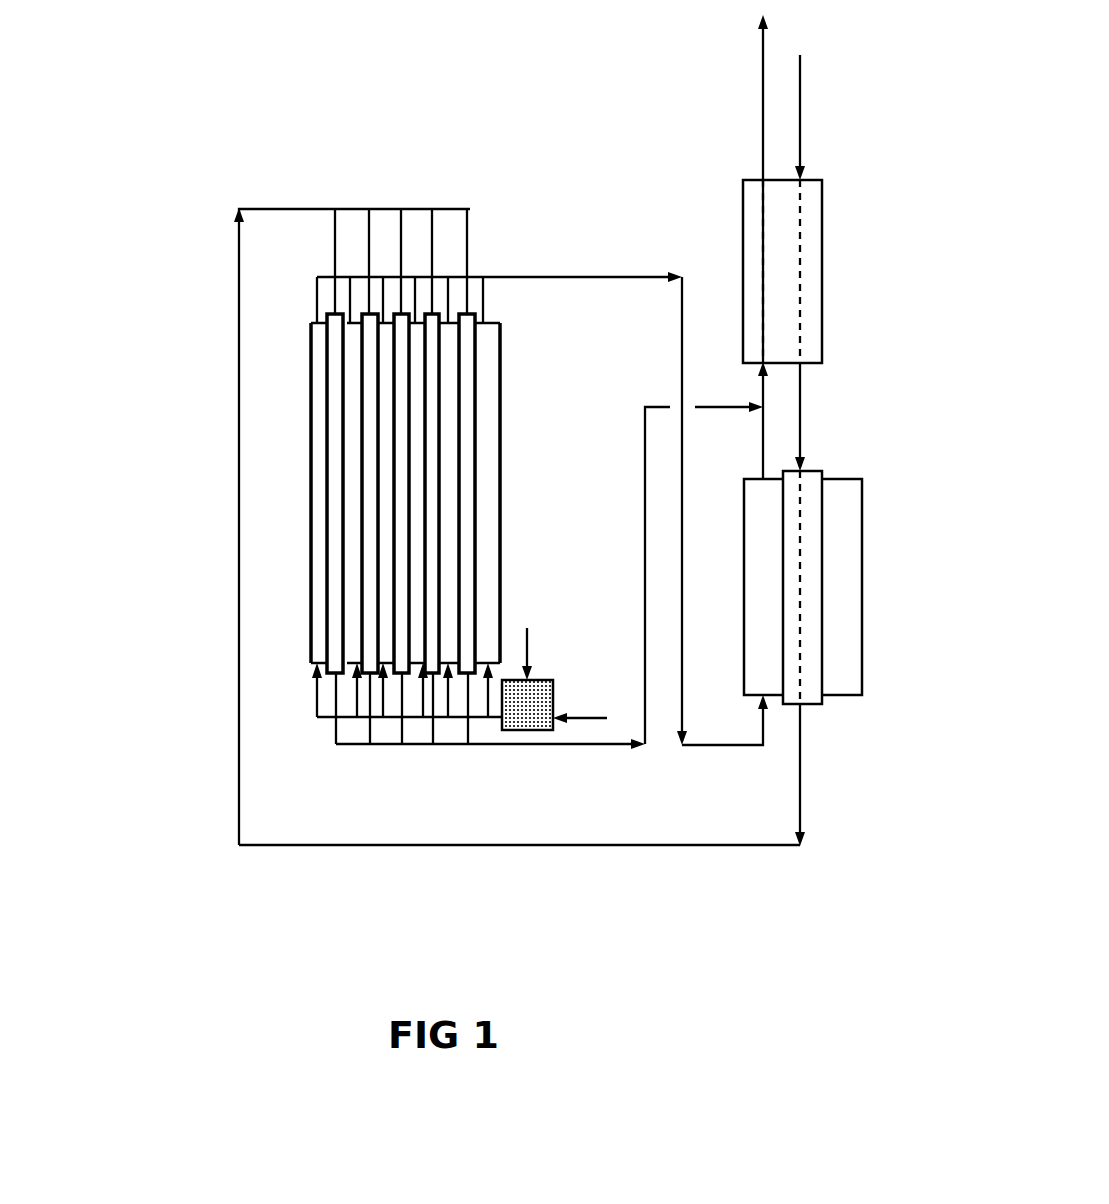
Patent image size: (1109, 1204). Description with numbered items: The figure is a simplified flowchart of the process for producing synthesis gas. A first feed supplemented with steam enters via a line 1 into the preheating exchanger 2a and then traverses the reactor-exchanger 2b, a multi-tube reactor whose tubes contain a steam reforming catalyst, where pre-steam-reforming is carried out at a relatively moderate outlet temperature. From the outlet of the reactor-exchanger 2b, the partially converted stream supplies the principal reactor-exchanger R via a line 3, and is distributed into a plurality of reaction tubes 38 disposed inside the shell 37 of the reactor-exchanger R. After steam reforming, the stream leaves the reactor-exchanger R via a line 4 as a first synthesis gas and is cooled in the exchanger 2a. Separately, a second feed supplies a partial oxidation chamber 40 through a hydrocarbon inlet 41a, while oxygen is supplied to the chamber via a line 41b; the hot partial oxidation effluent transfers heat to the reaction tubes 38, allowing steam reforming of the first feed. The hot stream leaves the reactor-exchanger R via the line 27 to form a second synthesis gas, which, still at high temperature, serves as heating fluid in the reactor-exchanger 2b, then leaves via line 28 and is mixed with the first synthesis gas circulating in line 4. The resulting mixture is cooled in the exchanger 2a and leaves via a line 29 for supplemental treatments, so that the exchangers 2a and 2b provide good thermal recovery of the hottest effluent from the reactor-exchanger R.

The line 1 is at (802, 108).
The preheating exchanger 2a is at (825, 267).
The reactor-exchanger 2b is at (866, 618).
The line 3 is at (303, 209).
The line 4 is at (567, 744).
The line 27 is at (592, 277).
The line 28 is at (763, 433).
The line 29 is at (763, 83).
The shell 37 is at (502, 483).
The reaction tubes 38 is at (458, 578).
The partial oxidation chamber 40 is at (513, 730).
The hydrocarbon inlet 41a is at (528, 640).
The line 41b is at (585, 718).
The reactor-exchanger R is at (520, 387).